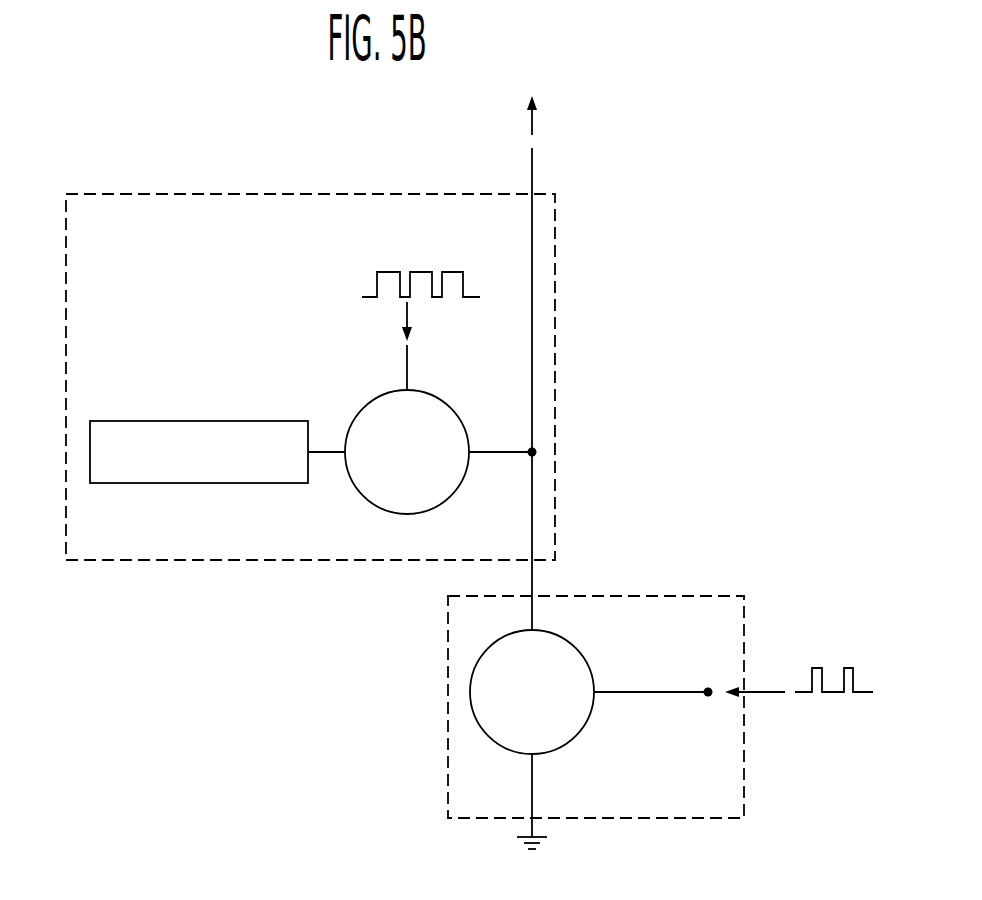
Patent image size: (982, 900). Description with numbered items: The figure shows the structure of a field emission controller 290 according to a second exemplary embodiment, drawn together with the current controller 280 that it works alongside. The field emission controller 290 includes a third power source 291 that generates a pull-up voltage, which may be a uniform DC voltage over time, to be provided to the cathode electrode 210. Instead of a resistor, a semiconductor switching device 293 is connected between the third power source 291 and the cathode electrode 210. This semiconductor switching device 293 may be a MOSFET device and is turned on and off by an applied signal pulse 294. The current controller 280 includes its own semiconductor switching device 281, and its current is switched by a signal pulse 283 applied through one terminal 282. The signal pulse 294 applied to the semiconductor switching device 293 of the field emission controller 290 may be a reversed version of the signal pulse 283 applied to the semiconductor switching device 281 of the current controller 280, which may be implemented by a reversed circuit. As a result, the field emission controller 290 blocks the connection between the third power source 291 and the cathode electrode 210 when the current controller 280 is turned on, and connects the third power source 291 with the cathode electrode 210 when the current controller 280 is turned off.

The cathode electrode 210 is at (534, 346).
The current controller 280 is at (624, 596).
The semiconductor switching device 281 is at (578, 735).
The terminal 282 is at (648, 692).
The signal pulse 283 is at (818, 665).
The field emission controller 290 is at (104, 194).
The third power source 291 is at (160, 421).
The semiconductor switching device 293 is at (361, 412).
The signal pulse 294 is at (369, 277).